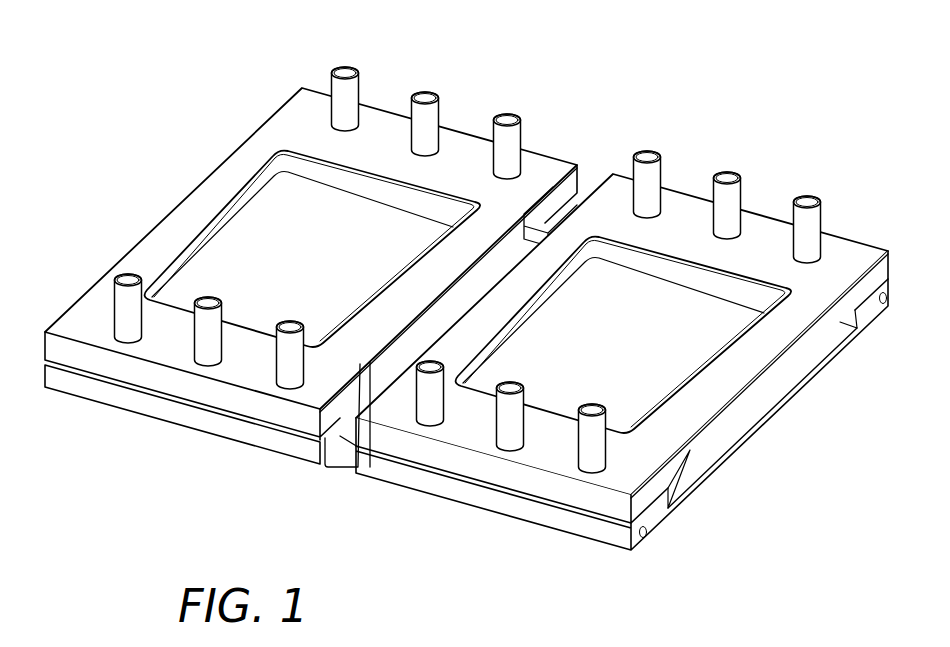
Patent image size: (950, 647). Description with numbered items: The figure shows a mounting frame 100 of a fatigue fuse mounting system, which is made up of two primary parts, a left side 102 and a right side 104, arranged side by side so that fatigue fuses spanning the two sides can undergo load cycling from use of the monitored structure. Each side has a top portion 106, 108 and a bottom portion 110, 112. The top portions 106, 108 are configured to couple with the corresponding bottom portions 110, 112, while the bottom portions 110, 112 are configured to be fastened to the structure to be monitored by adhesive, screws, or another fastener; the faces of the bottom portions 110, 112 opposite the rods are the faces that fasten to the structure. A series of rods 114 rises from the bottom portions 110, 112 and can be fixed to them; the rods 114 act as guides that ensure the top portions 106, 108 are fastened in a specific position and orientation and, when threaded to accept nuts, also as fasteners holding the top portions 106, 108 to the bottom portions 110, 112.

The mounting frame 100 is at (456, 293).
The left side 102 is at (291, 250).
The right side 104 is at (631, 362).
The top portion 106 is at (287, 102).
The top portion 108 is at (857, 257).
The bottom portion 110 is at (98, 392).
The bottom portion 112 is at (805, 365).
The rods 114 is at (425, 95).